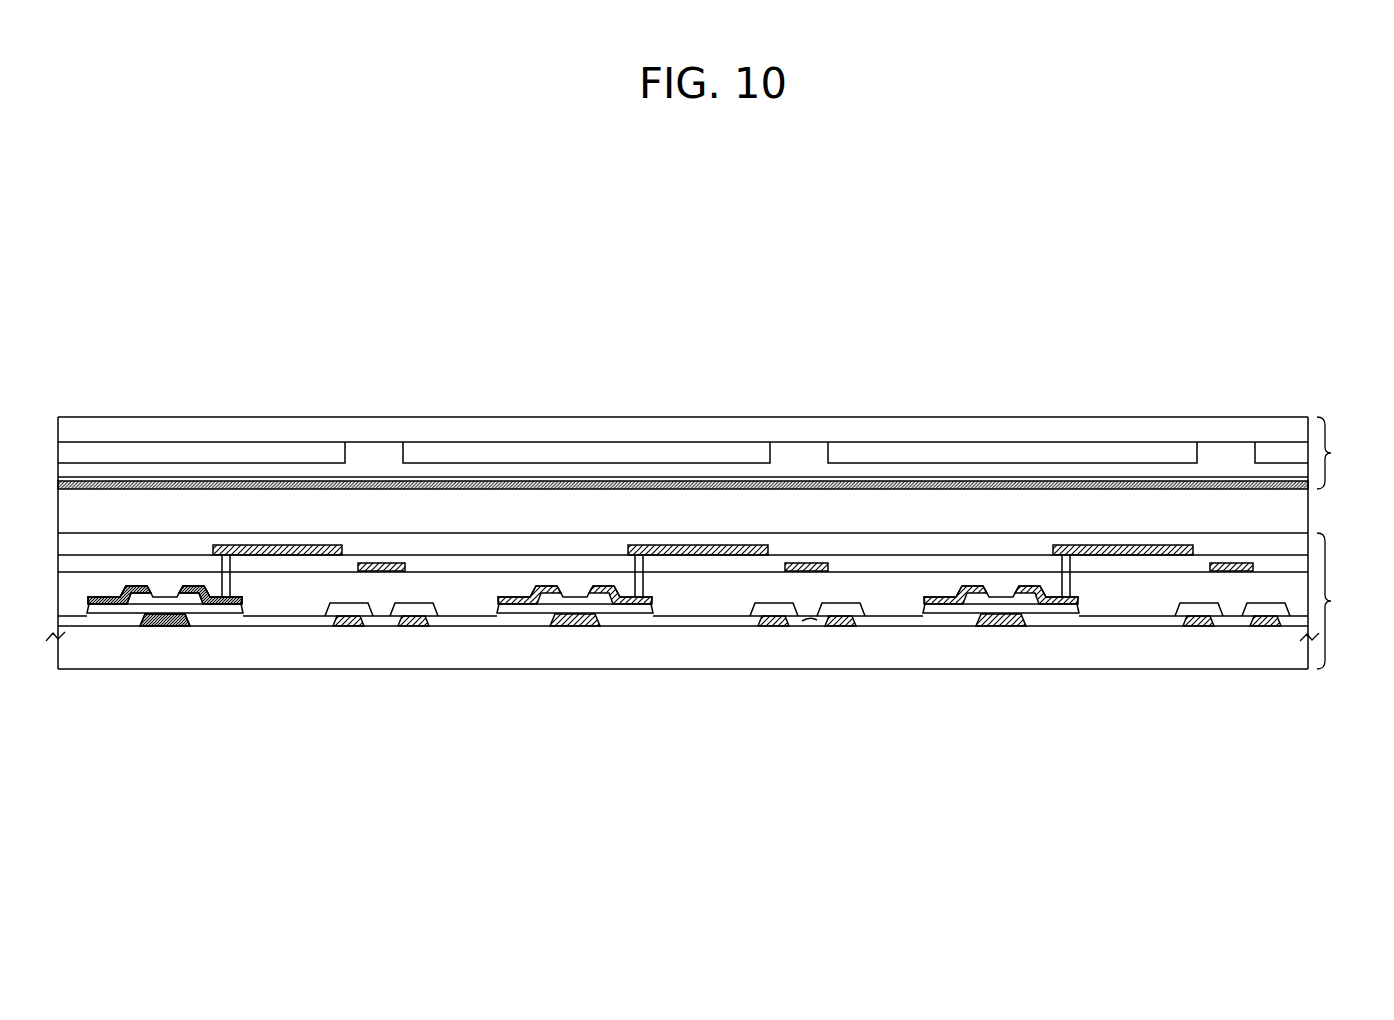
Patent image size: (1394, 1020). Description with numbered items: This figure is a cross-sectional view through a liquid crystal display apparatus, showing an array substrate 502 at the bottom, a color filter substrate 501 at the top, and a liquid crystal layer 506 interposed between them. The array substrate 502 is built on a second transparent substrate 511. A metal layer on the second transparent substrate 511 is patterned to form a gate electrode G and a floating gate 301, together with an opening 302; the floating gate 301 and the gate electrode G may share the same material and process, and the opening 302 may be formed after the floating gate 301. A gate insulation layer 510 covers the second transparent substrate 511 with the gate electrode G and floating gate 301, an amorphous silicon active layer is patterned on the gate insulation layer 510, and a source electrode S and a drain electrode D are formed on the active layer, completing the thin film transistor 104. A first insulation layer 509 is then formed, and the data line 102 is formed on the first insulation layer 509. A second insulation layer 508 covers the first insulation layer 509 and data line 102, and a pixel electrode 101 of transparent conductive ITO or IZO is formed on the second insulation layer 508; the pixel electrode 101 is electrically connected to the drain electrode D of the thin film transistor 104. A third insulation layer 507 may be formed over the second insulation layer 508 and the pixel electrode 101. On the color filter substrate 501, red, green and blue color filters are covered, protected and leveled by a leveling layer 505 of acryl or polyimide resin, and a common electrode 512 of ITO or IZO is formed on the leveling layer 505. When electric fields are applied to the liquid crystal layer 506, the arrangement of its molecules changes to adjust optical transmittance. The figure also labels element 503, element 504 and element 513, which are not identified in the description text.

The pixel electrode 101 is at (730, 545).
The data line 102 is at (797, 565).
The thin film transistor 104 is at (166, 681).
The source electrode S is at (100, 614).
The gate electrode G is at (165, 626).
The drain electrode D is at (212, 656).
The floating gate 301 is at (412, 626).
The opening 302 is at (815, 622).
The color filter substrate 501 is at (717, 453).
The array substrate 502 is at (717, 601).
The upper transparent substrate 503 is at (1087, 425).
The color filter layer 504 is at (1148, 450).
The leveling layer 505 is at (1280, 473).
The liquid crystal layer 506 is at (1242, 507).
The third insulation layer 507 is at (933, 545).
The second insulation layer 508 is at (840, 563).
The first insulation layer 509 is at (892, 588).
The gate insulation layer 510 is at (698, 622).
The second transparent substrate 511 is at (905, 655).
The common electrode 512 is at (1217, 480).
The contact hole 513 is at (1067, 582).